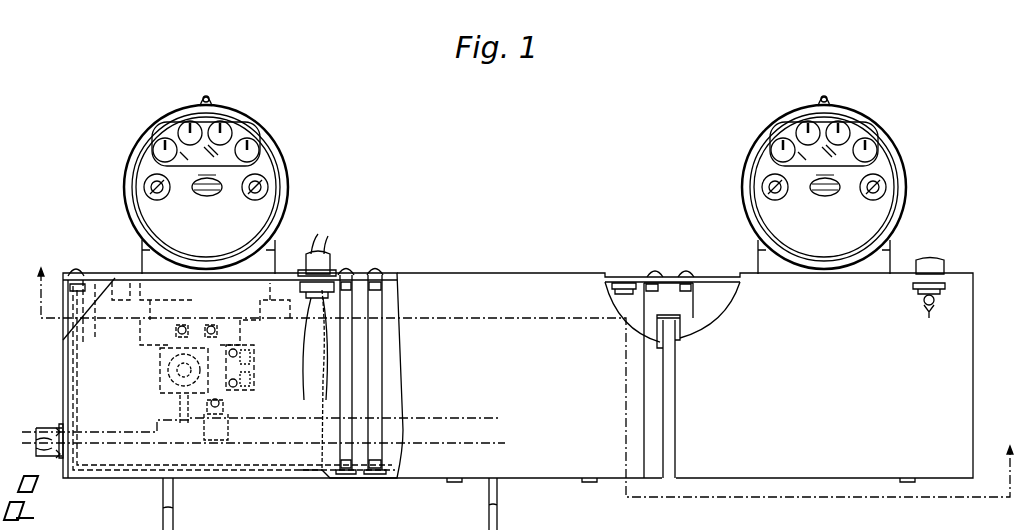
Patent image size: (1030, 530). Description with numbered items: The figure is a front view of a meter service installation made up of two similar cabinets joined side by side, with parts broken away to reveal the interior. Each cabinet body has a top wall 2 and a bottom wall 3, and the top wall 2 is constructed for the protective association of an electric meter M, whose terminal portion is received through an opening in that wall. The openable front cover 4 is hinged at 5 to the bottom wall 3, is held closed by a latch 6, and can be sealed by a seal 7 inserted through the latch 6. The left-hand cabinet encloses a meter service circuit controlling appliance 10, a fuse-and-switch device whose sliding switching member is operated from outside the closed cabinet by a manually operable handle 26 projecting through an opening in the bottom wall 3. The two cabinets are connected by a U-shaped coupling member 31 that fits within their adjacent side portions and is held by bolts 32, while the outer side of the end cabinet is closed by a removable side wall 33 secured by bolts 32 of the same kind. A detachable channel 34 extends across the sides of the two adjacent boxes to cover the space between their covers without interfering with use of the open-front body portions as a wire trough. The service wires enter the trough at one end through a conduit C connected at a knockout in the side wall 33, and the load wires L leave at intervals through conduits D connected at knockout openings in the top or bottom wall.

The electric meter M is at (277, 168).
The front cover 4 is at (62, 378).
The removable side wall 33 is at (62, 328).
The meter service circuit controlling appliance 10 is at (166, 350).
The top wall 2 is at (730, 276).
The hinge 5 is at (135, 478).
The conduit C is at (49, 449).
The coupling member 31 is at (384, 300).
The bolts 32 is at (80, 274).
The detachable channel 34 is at (362, 332).
The latch 6 is at (310, 330).
The load wires L is at (318, 246).
The conduits D is at (330, 270).
The seal 7 is at (922, 303).
The bottom wall 3 is at (318, 478).
The handle 26 is at (173, 518).